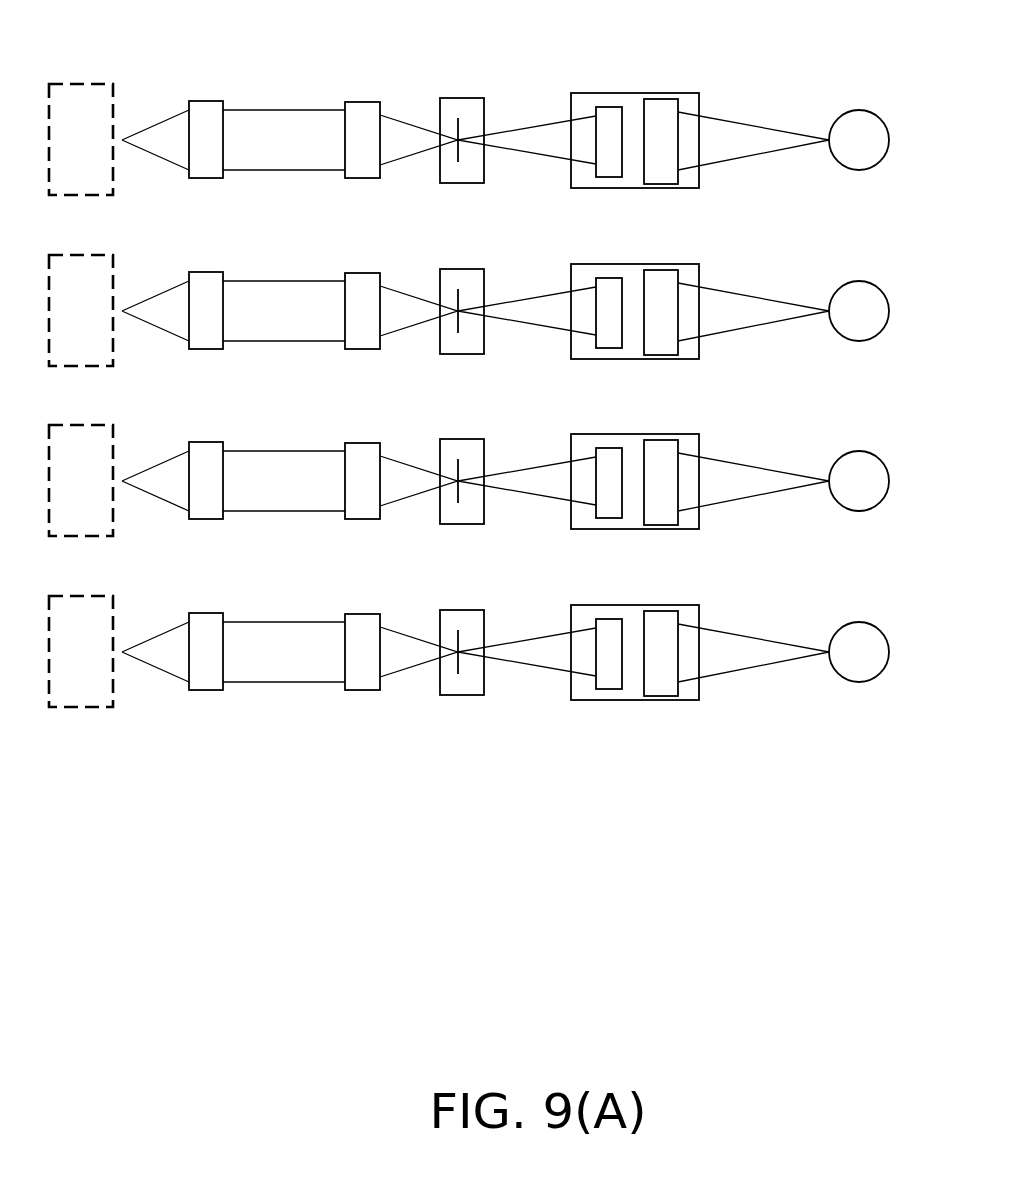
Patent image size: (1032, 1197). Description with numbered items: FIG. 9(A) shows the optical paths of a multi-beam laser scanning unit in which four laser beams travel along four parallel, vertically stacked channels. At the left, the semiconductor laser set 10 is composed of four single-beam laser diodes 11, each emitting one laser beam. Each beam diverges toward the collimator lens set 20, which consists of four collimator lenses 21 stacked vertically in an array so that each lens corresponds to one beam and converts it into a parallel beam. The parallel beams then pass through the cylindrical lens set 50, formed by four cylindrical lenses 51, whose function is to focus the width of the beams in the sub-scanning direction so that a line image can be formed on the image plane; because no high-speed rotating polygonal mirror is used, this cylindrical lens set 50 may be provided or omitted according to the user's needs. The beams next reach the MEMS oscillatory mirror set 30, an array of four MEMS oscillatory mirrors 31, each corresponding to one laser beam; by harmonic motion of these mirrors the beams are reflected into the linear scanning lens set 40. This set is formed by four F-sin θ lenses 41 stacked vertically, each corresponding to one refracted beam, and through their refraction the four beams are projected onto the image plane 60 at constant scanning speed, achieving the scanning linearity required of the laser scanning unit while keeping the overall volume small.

The semiconductor laser set 10 is at (107, 419).
The single-beam laser diode 11 is at (97, 84).
The collimator lens set 20 is at (222, 410).
The collimator lens 21 is at (205, 110).
The cylindrical lens set 50 is at (380, 410).
The cylindrical lens 51 is at (362, 113).
The MEMS oscillatory mirror set 30 is at (484, 412).
The MEMS oscillatory mirror 31 is at (473, 112).
The linear scanning lens set 40 is at (668, 424).
The F-sin θ lens 41 is at (687, 100).
The image plane 60 is at (858, 688).